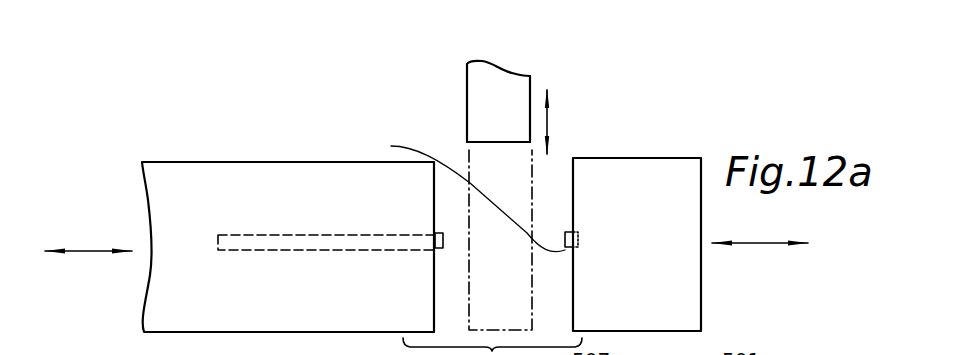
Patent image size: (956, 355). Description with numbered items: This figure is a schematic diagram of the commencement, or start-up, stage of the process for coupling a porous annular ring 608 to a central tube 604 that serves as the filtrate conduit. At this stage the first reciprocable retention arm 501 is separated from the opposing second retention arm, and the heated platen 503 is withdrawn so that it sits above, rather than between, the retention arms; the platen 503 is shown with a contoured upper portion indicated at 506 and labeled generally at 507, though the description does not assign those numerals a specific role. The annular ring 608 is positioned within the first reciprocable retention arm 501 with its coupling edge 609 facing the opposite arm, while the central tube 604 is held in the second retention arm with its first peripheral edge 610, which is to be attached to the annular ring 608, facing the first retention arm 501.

The first reciprocable retention arm 501 is at (662, 167).
The platen 503 is at (526, 78).
The upper block curved surface 506 is at (517, 82).
The upper block 507 is at (492, 72).
The central tube 604 is at (318, 233).
The annular ring 608 is at (457, 193).
The coupling edge 609 is at (566, 235).
The first peripheral edge 610 is at (443, 240).